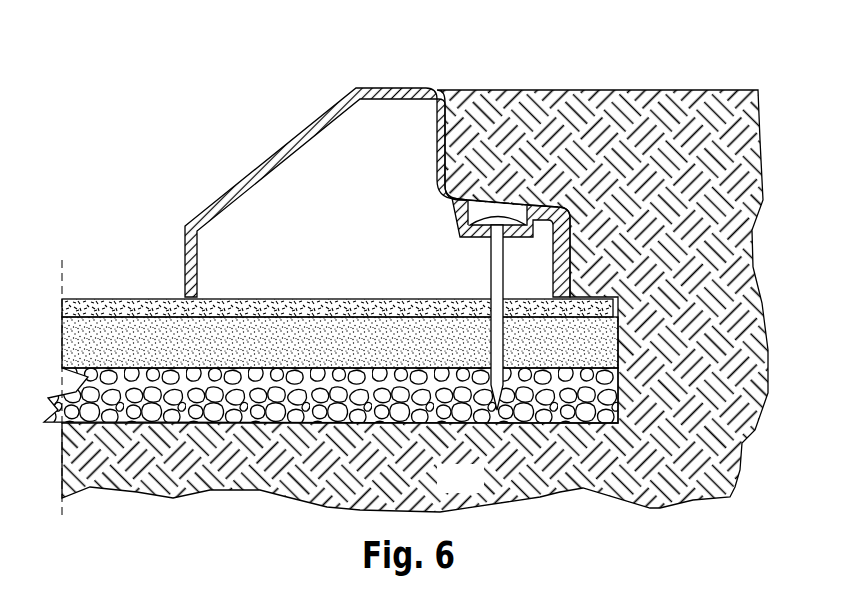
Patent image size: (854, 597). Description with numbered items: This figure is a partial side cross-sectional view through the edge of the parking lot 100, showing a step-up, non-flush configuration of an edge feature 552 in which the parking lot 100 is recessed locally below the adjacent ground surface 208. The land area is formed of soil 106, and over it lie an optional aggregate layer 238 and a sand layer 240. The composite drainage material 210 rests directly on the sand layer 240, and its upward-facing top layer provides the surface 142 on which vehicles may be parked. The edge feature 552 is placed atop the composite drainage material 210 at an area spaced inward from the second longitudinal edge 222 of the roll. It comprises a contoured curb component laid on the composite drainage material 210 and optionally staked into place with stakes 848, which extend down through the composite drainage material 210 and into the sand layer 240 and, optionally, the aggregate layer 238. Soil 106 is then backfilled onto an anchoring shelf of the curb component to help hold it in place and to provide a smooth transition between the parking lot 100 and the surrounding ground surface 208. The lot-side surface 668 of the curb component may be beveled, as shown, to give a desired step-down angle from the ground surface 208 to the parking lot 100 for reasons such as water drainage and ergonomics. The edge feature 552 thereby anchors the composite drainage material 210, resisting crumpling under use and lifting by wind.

The parking lot 100 is at (120, 233).
The soil 106 is at (481, 488).
The surface 142 is at (92, 297).
The ground surface 208 is at (618, 90).
The composite drainage material 210 is at (160, 297).
The second longitudinal edge 222 is at (613, 306).
The aggregate layer 238 is at (97, 402).
The sand layer 240 is at (90, 347).
The edge feature 552 is at (387, 62).
The lot-side surface 668 is at (312, 133).
The stakes 848 is at (493, 268).